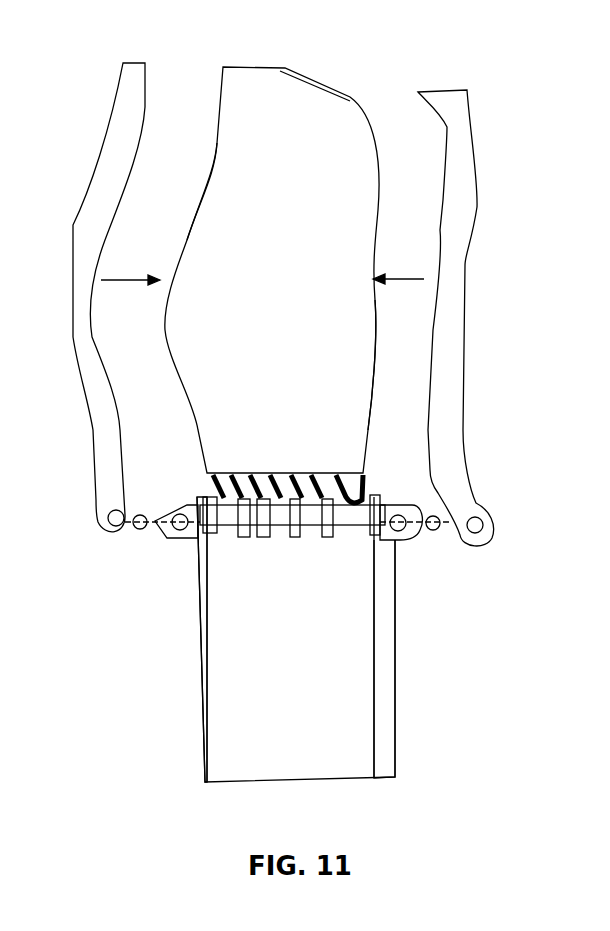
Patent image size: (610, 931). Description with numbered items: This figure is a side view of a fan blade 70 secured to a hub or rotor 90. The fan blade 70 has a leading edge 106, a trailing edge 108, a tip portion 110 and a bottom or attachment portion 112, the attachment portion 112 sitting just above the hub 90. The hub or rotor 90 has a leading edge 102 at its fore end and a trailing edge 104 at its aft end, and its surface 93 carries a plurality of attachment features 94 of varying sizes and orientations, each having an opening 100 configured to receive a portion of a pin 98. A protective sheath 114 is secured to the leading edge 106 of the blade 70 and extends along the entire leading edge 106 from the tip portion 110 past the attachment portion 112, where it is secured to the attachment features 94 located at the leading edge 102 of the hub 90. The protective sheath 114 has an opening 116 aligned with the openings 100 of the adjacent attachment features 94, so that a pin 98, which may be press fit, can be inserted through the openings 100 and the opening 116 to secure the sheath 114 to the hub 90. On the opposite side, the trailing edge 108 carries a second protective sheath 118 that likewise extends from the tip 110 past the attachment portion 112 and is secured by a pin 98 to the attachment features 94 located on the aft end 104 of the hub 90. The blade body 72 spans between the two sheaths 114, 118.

The fan blade 70 is at (484, 131).
The seal segment body 72 is at (275, 297).
The hub or rotor 90 is at (340, 730).
The surface 93 is at (279, 660).
The attachment features 94 is at (237, 527).
The pin 98 is at (136, 530).
The opening 100 is at (180, 513).
The leading edge 102 is at (202, 740).
The trailing edge 104 is at (387, 663).
The leading edge 106 is at (217, 143).
The trailing edge 108 is at (377, 357).
The tip portion 110 is at (278, 70).
The bottom or attachment portion 112 is at (280, 473).
The protective sheath 114 is at (100, 183).
The opening 116 is at (108, 521).
The protective sheath 118 is at (452, 357).